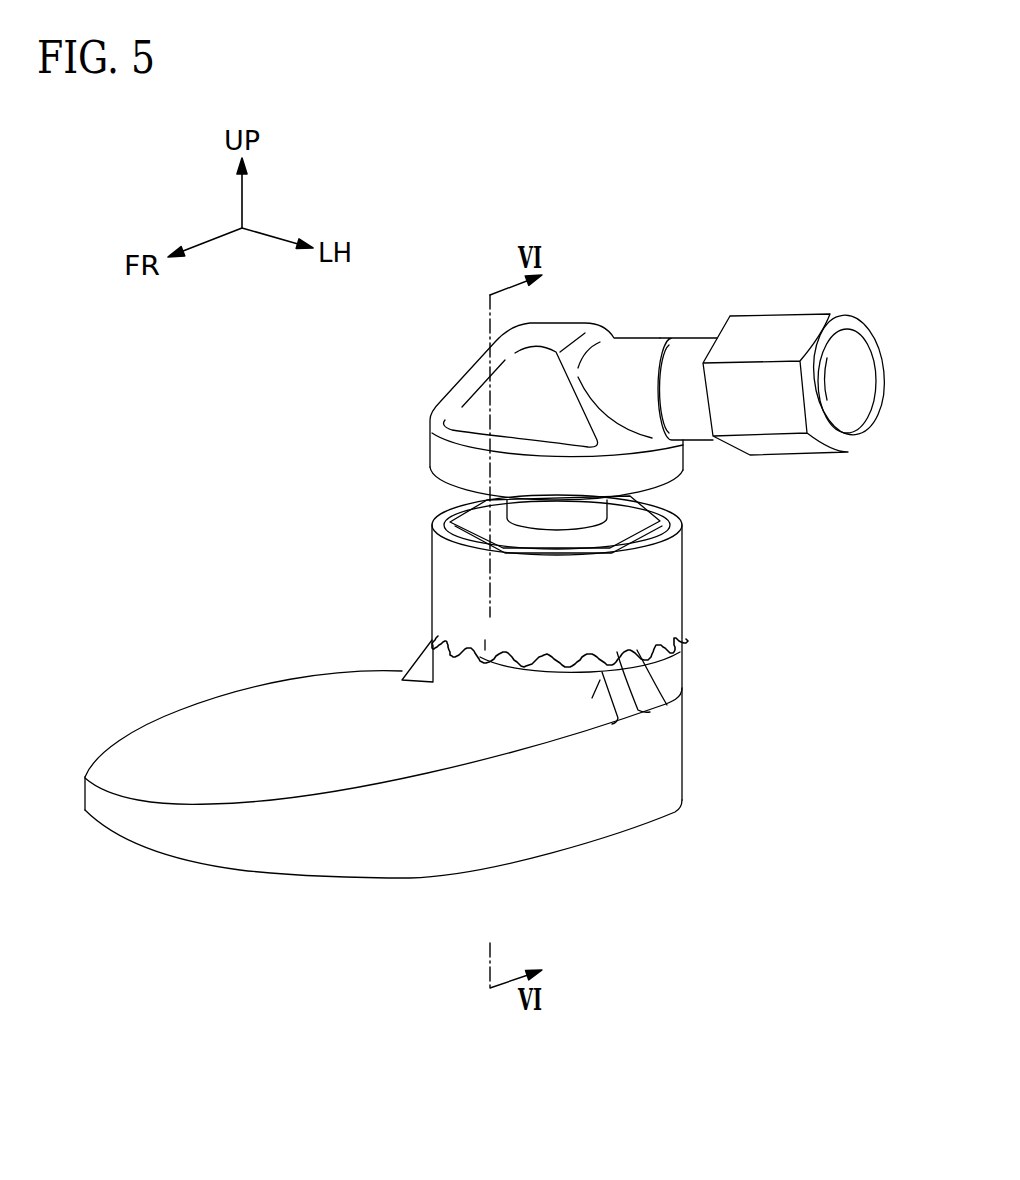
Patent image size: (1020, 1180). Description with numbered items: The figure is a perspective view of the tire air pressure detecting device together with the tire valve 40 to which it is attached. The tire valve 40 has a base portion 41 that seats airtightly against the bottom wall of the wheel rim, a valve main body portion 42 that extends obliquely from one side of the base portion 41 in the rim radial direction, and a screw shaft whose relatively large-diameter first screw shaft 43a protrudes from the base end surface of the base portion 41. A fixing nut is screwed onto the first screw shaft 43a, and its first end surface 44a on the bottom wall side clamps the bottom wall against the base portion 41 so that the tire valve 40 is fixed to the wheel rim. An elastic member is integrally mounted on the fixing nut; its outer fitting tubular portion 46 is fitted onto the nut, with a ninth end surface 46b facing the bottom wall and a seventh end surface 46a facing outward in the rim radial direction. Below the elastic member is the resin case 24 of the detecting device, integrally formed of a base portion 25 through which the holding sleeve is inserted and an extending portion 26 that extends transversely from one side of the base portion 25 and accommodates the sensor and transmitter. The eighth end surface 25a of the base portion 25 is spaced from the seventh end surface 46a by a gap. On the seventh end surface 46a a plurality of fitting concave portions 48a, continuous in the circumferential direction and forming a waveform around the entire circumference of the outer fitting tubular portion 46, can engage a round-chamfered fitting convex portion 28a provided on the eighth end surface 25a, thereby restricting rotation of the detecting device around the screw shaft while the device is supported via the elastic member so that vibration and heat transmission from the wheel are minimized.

The tire valve 40 is at (787, 313).
The base portion 41 is at (470, 388).
The valve main body portion 42 is at (683, 357).
The first screw shaft 43a is at (583, 512).
The first end surface 44a is at (630, 513).
The outer fitting tubular portion 46 is at (667, 598).
The seventh end surface 46a is at (583, 663).
The ninth end surface 46b is at (647, 543).
The fitting concave portions 48a is at (613, 655).
The case 24 is at (451, 778).
The base portion 25 is at (657, 817).
The eighth end surface 25a is at (432, 637).
The extending portion 26 is at (313, 845).
The fitting convex portion 28a is at (486, 648).